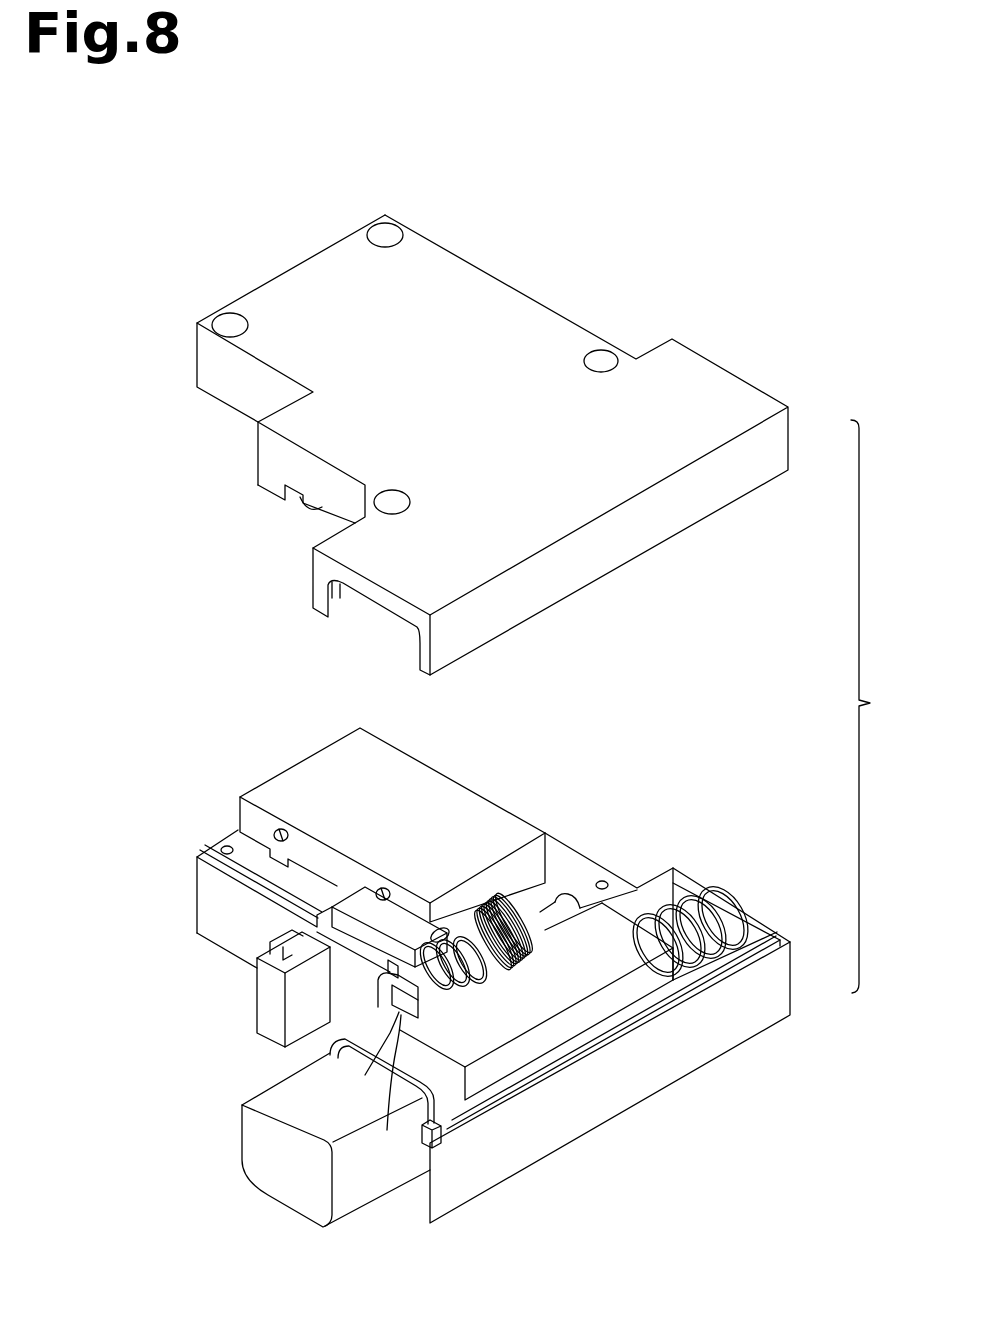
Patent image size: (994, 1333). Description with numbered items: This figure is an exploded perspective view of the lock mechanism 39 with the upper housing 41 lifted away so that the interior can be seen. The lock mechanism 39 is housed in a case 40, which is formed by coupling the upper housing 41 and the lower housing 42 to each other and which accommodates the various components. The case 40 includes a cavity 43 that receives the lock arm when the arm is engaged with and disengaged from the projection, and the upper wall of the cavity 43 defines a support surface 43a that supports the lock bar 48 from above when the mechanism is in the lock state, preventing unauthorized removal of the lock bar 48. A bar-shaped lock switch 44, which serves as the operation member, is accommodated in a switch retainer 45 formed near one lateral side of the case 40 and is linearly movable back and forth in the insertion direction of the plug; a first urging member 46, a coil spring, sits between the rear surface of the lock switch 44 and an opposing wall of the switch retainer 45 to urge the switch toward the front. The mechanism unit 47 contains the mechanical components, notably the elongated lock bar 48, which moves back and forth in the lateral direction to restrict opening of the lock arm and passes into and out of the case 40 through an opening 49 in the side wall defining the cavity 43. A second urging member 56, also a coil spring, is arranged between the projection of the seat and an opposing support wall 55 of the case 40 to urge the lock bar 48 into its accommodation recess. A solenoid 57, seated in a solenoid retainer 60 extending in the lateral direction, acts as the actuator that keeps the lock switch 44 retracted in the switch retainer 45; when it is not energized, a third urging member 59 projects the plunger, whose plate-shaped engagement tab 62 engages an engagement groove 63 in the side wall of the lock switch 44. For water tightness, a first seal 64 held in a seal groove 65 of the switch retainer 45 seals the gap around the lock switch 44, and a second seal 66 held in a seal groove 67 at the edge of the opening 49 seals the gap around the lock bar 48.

The lock mechanism 39 is at (219, 147).
The case 40 is at (880, 706).
The upper housing 41 is at (790, 440).
The lower housing 42 is at (780, 972).
The cavity 43 is at (298, 1045).
The support surface 43a is at (330, 503).
The lock switch 44 is at (363, 1198).
The switch retainer 45 is at (595, 1028).
The first urging member 46 is at (712, 895).
The mechanism unit 47 is at (343, 1000).
The lock bar 48 is at (415, 1007).
The opening 49 is at (386, 1090).
The support wall 55 is at (453, 905).
The second urging member 56 is at (438, 915).
The solenoid 57 is at (443, 775).
The third urging member 59 is at (512, 896).
The solenoid retainer 60 is at (262, 892).
The engagement tab 62 is at (562, 900).
The engagement groove 63 is at (483, 972).
The first seal 64 is at (410, 1078).
The seal groove 65 is at (447, 1138).
The second seal 66 is at (393, 967).
The seal groove 67 is at (369, 1060).